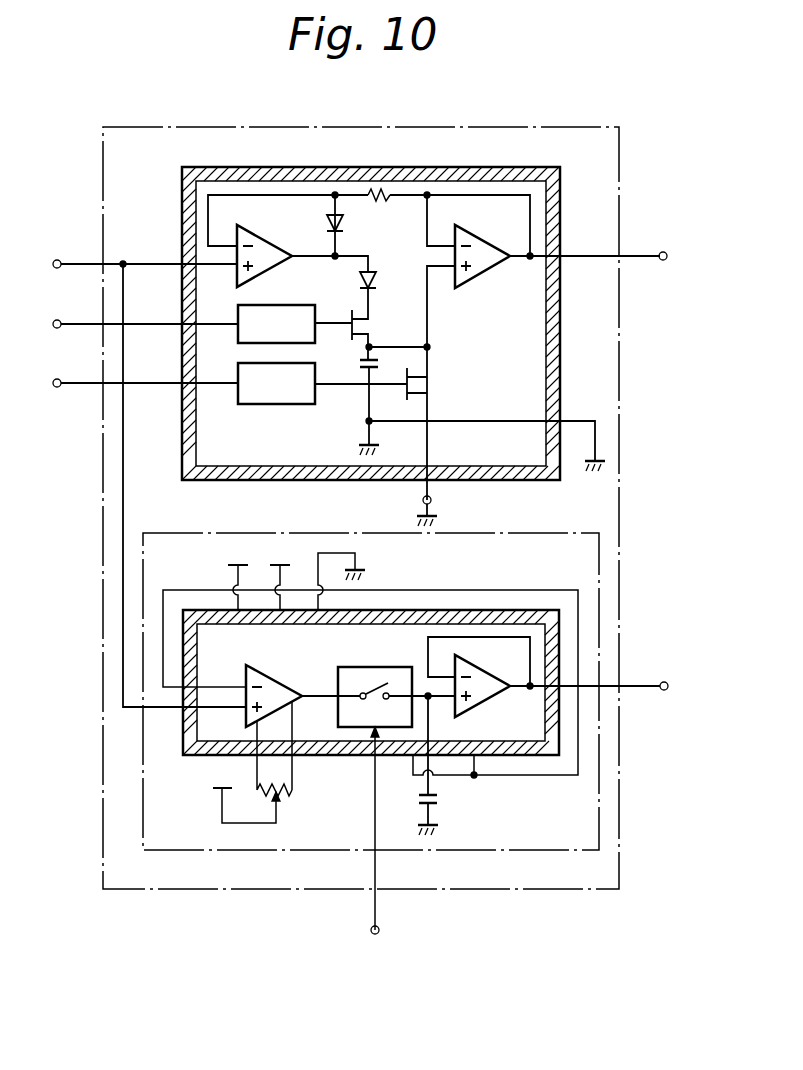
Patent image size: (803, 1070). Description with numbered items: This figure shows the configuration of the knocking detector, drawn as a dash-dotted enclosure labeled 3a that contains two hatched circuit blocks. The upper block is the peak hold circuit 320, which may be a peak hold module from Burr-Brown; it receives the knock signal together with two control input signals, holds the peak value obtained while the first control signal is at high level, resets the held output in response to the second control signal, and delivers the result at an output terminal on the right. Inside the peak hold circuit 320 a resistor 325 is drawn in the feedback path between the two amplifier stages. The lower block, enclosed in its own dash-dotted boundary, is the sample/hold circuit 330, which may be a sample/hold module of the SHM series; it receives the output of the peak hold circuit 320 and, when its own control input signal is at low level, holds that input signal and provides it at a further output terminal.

The peak hold and sample hold circuit 3a is at (667, 205).
The peak hold circuit 320 is at (360, 332).
The resistor 325 is at (376, 190).
The sample/hold circuit 330 is at (570, 521).